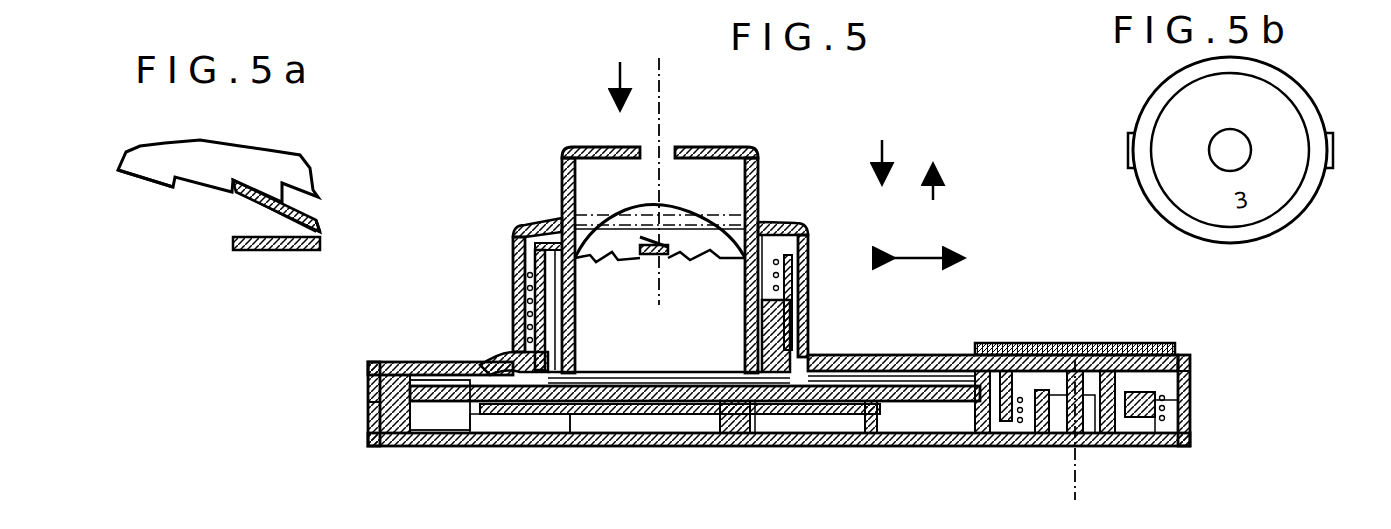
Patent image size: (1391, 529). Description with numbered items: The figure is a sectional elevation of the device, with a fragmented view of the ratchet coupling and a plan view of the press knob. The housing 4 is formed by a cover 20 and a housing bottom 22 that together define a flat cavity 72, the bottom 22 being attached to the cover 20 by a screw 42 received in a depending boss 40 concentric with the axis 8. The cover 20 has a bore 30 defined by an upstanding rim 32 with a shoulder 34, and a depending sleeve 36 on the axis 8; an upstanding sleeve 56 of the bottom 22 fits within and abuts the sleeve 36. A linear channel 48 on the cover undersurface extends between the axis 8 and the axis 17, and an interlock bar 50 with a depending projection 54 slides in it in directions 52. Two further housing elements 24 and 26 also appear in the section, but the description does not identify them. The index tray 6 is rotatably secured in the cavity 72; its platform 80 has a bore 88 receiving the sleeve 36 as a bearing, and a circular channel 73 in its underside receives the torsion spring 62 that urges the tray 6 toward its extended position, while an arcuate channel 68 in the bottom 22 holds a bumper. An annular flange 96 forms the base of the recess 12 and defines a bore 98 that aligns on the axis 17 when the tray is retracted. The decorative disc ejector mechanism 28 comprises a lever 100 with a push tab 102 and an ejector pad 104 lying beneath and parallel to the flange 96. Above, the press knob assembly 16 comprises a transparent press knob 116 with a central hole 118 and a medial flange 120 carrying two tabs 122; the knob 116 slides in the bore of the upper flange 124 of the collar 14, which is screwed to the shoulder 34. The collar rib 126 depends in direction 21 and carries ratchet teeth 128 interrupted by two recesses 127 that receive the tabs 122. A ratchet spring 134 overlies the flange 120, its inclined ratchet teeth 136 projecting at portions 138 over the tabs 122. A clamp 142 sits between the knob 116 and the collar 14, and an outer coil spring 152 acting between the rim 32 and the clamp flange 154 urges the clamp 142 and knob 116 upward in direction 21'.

In FIG. 5, the housing 4 is at (345, 410).
In FIG. 5, the index tray 6 is at (1190, 400).
In FIG. 5, the axis 8 is at (1076, 488).
In FIG. 5, the recess 12 is at (650, 446).
In FIG. 5, the collar 14 is at (513, 232).
In FIG. 5, the press knob assembly 16 is at (692, 229).
In FIG. 5, the axis 17 is at (665, 100).
In FIG. 5, the cover 20 is at (1192, 376).
In FIG. 5, the direction 21 is at (746, 122).
In FIG. 5, the direction 21' is at (962, 185).
In FIG. 5, the housing bottom 22 is at (1192, 426).
In FIG. 5, the partition 24 is at (990, 355).
In FIG. 5, the knurled cap 26 is at (1160, 345).
In FIG. 5, the decorative disc ejector mechanism 28 is at (465, 450).
In FIG. 5, the bore 30 is at (665, 385).
In FIG. 5, the rim 32 is at (520, 350).
In FIG. 5, the shoulder 34 is at (513, 320).
In FIG. 5, the sleeve 36 is at (1125, 375).
In FIG. 5, the boss 40 is at (1090, 371).
In FIG. 5, the screw 42 is at (1080, 446).
In FIG. 5, the channel 48 is at (915, 380).
In FIG. 5, the interlock bar 50 is at (862, 355).
In FIG. 5, the directions 52 is at (945, 258).
In FIG. 5, the projection 54 is at (1005, 375).
In FIG. 5, the sleeve 56 is at (1160, 446).
In FIG. 5, the torsion spring 62 is at (1015, 446).
In FIG. 5, the arcuate channel 68 is at (795, 446).
In FIG. 5, the cavity 72 is at (368, 430).
In FIG. 5, the circular channel 73 is at (1040, 446).
In FIG. 5, the platform 80 is at (860, 446).
In FIG. 5, the bore 88 is at (1135, 446).
In FIG. 5, the annular flange 96 is at (725, 446).
In FIG. 5, the bore 98 is at (680, 446).
In FIG. 5, the lever 100 is at (572, 446).
In FIG. 5, the push tab 102 is at (440, 385).
In FIG. 5, the ejector pad 104 is at (600, 404).
In FIG. 5, the press knob 116 is at (758, 188).
In FIG. 5B, the press knob 116 is at (1275, 110).
In FIG. 5, the central hole 118 is at (668, 150).
In FIG. 5B, the central hole 118 is at (1255, 120).
In FIG. 5A, the flange 120 is at (262, 168).
In FIG. 5, the flange 120 is at (535, 258).
In FIG. 5B, the flange 120 is at (1292, 226).
In FIG. 5A, the tabs 122 is at (305, 252).
In FIG. 5, the tabs 122 is at (668, 256).
In FIG. 5B, the tabs 122 is at (1128, 148).
In FIG. 5, the flange 124 is at (535, 242).
In FIG. 5, the annular rib 126 is at (695, 255).
In FIG. 5, the recesses 127 is at (621, 307).
In FIG. 5A, the ratchet teeth 128 is at (190, 188).
In FIG. 5, the ratchet teeth 128 is at (602, 265).
In FIG. 5A, the ratchet spring 134 is at (325, 228).
In FIG. 5, the ratchet spring 134 is at (560, 200).
In FIG. 5A, the ratchet teeth 136 is at (322, 210).
In FIG. 5A, the portions 138 is at (245, 200).
In FIG. 5, the portions 138 is at (660, 202).
In FIG. 5, the clamp 142 is at (810, 295).
In FIG. 5, the outer coil spring 152 is at (808, 290).
In FIG. 5, the flange 154 is at (810, 255).